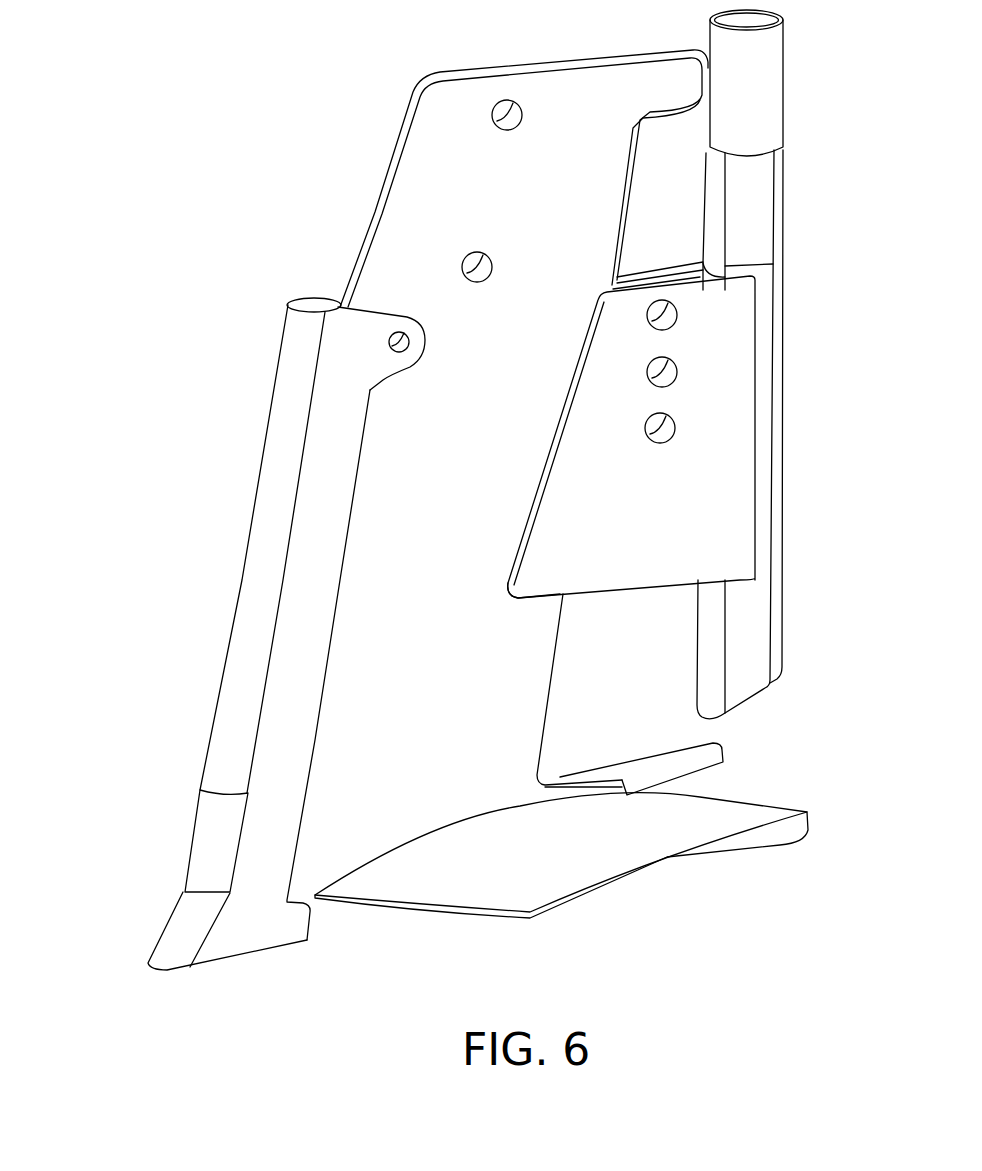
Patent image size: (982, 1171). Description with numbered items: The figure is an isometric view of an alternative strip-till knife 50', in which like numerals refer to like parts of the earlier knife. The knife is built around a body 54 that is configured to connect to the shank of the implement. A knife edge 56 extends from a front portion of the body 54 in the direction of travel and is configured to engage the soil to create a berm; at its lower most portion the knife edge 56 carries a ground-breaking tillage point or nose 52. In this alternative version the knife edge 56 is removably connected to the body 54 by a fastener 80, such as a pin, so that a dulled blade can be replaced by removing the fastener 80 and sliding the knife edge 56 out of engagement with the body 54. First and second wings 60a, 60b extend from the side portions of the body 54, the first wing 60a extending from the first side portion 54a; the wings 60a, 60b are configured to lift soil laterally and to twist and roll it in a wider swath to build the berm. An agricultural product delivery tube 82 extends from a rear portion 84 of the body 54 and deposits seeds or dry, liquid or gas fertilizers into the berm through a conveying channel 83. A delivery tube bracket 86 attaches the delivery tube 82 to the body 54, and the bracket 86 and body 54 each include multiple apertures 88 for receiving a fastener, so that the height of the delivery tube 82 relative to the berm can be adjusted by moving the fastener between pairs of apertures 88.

The alternative strip-till knife 50' is at (463, 490).
The nose 52 is at (167, 948).
The body 54 is at (437, 213).
The first side portion 54a is at (523, 680).
The knife edge 56 is at (243, 612).
The first wing 60a is at (610, 853).
The second wing 60b is at (663, 763).
The fastener 80 is at (388, 342).
The agricultural product delivery tube 82 is at (836, 258).
The conveying channel 83 is at (753, 97).
The rear portion 84 is at (563, 602).
The delivery tube bracket 86 is at (655, 568).
The apertures 88 is at (678, 318).